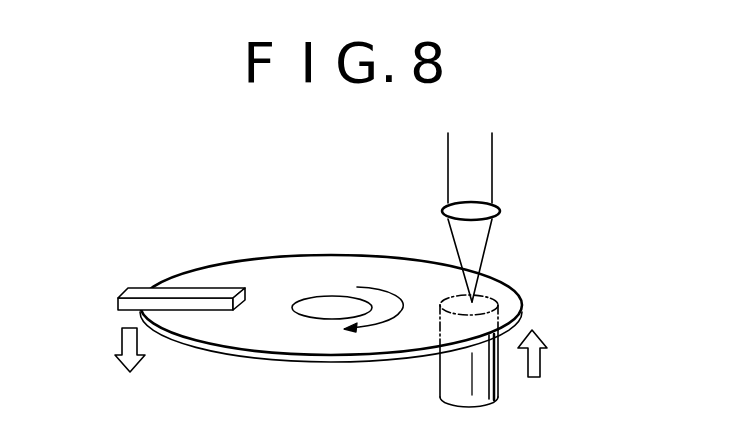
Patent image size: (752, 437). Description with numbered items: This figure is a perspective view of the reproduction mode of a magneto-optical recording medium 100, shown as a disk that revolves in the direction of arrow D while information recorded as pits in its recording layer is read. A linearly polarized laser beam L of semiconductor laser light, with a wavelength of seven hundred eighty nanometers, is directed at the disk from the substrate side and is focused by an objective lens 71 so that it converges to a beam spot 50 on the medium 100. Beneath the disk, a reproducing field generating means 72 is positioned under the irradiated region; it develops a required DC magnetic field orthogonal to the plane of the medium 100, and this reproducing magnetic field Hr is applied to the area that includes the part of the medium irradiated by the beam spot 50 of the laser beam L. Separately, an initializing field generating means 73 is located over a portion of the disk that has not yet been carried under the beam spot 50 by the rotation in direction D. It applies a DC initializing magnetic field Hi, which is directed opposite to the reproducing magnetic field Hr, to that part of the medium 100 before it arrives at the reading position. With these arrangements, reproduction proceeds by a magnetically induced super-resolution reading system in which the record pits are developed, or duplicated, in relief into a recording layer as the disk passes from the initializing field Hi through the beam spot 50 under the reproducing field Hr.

The magneto-optical recording medium 100 is at (523, 313).
The direction of revolution arrow D is at (377, 287).
The initializing field generating means 73 is at (145, 288).
The initializing magnetic field Hi is at (122, 340).
The reproducing magnetic field Hr is at (543, 363).
The laser beam L is at (494, 155).
The objective lens 71 is at (499, 203).
The beam spot 50 is at (487, 292).
The reproducing field generating means 72 is at (440, 377).